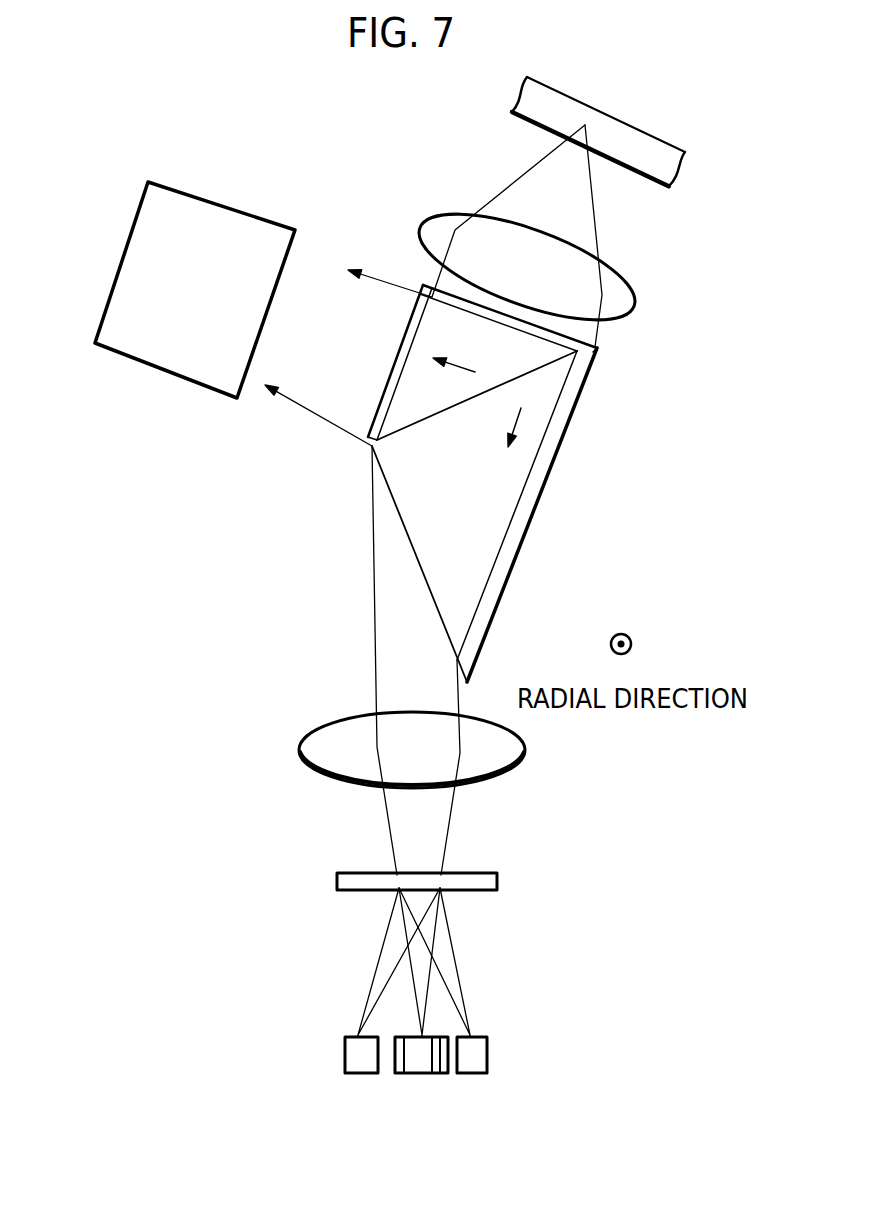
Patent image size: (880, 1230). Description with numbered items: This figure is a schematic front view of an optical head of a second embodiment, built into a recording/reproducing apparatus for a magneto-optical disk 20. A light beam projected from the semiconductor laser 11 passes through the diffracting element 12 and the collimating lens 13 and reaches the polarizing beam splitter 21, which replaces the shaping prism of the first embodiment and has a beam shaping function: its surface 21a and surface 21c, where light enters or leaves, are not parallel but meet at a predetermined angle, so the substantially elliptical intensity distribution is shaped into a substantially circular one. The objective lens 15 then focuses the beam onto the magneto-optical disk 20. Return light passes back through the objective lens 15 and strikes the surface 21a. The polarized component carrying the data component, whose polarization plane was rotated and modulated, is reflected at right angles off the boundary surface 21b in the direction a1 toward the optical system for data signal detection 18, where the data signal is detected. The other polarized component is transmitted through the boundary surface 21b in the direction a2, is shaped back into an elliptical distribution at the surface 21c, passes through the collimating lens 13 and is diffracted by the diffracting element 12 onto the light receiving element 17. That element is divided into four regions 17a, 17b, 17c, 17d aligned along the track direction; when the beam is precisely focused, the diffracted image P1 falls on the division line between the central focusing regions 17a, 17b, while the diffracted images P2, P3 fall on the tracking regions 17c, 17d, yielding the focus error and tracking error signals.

The magneto-optical disk 20 is at (625, 152).
The objective lens 15 is at (620, 296).
The polarizing beam splitter 21 is at (497, 483).
The surface of polarizing beam splitter 21a is at (597, 342).
The boundary surface 21b is at (467, 403).
The surface of polarizing beam splitter 21c is at (413, 548).
The optical system for data signal detection 18 is at (173, 363).
The collimating lens 13 is at (505, 753).
The diffracting element 12 is at (497, 878).
The light receiving element 17 is at (413, 1085).
The light receiving region 17a is at (438, 1075).
The light receiving region 17b is at (420, 1075).
The light receiving region 17c is at (343, 1060).
The light receiving region 17d is at (477, 1052).
The semiconductor laser 11 is at (447, 1085).
The diffracted image P1 is at (422, 1033).
The diffracted image P2 is at (357, 1035).
The diffracted image P3 is at (470, 1035).
The direction a1 is at (456, 353).
The direction a2 is at (523, 415).